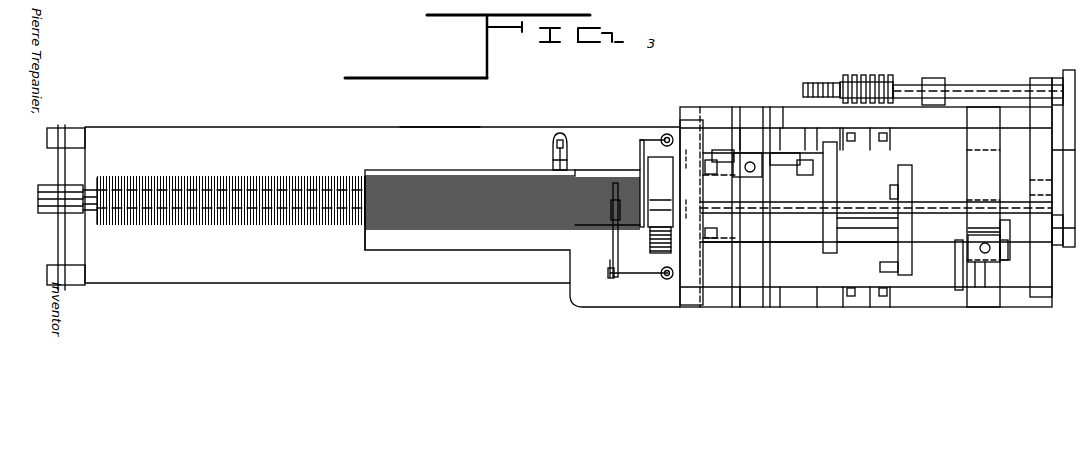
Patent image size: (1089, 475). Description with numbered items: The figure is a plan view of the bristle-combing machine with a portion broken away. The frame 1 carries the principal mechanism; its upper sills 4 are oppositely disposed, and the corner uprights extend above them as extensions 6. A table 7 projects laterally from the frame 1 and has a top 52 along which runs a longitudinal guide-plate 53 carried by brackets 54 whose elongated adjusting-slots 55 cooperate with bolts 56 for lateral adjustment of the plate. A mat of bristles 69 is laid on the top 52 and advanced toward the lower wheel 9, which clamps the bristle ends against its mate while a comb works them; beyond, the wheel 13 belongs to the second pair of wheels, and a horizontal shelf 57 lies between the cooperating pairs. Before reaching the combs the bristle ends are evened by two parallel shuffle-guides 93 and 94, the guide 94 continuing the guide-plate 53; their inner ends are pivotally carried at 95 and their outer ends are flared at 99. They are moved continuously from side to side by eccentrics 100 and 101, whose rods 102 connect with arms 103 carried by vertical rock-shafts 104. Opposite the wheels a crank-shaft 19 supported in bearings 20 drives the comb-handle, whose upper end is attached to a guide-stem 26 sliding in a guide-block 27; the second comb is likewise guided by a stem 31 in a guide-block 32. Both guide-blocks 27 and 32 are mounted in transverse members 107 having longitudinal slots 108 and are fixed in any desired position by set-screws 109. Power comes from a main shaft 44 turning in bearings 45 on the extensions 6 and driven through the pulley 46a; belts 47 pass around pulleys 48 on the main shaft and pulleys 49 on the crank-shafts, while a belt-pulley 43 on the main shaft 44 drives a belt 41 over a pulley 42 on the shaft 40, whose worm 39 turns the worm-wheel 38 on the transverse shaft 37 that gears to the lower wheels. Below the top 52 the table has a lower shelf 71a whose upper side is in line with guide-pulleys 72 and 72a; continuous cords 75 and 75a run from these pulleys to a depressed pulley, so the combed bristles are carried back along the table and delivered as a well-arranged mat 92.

The frame 1 is at (855, 215).
The upper sills 4 is at (773, 105).
The extensions 6 is at (692, 120).
The table 7 is at (362, 170).
The wheel 9 is at (840, 203).
The wheel 13 is at (892, 190).
The crank-shaft 19 is at (782, 152).
The bearings 20 is at (720, 150).
The guide-stem 26 is at (766, 150).
The guide-block 27 is at (737, 150).
The stem 31 is at (992, 256).
The guide-block 32 is at (985, 290).
The transversely-disposed shaft 37 is at (858, 117).
The worm-wheel 38 is at (822, 82).
The worm 39 is at (866, 75).
The shaft 40 is at (966, 85).
The belt 41 is at (1064, 150).
The pulley 42 is at (1068, 70).
The belt-pulley 43 is at (1064, 228).
The main shaft 44 is at (886, 228).
The bearings 45 is at (716, 240).
The pulley 46a is at (658, 256).
The belts 47 is at (836, 175).
The pulleys 48 is at (915, 170).
The pulleys 49 is at (833, 135).
The top 52 is at (432, 126).
The guide-plate 53 is at (470, 170).
The brackets 54 is at (562, 135).
The adjusting-slots 55 is at (552, 156).
The bolts 56 is at (556, 134).
The horizontal shelf 57 is at (865, 250).
The mat of bristles 69 is at (476, 251).
The lower shelf 71a is at (246, 284).
The guide-pulley 72 is at (70, 214).
The guide-pulley 72a is at (52, 186).
The cord 75 is at (98, 212).
The cord 75a is at (97, 182).
The mat 92 is at (226, 174).
The shuffle-guide 93 is at (648, 200).
The shuffle-guide 94 is at (585, 170).
The pivot 95 is at (712, 175).
The flared extremities 99 is at (590, 226).
The eccentric 100 is at (608, 265).
The eccentric 101 is at (614, 186).
The rods 102 is at (641, 143).
The arms 103 is at (664, 135).
The rock-shafts 104 is at (670, 134).
The transverse members 107 is at (985, 108).
The slots 108 is at (783, 105).
The set-screws 109 is at (762, 178).